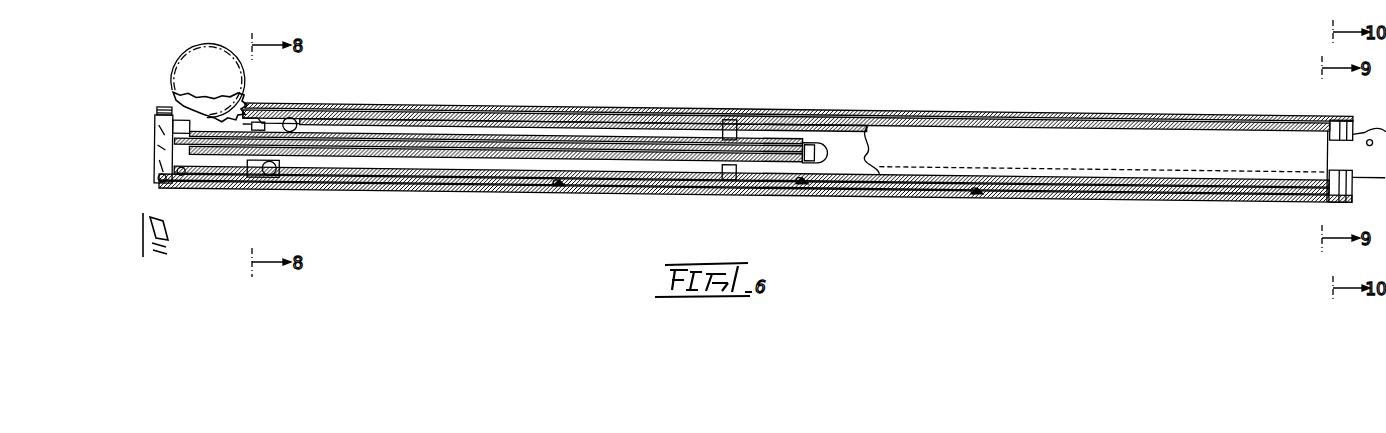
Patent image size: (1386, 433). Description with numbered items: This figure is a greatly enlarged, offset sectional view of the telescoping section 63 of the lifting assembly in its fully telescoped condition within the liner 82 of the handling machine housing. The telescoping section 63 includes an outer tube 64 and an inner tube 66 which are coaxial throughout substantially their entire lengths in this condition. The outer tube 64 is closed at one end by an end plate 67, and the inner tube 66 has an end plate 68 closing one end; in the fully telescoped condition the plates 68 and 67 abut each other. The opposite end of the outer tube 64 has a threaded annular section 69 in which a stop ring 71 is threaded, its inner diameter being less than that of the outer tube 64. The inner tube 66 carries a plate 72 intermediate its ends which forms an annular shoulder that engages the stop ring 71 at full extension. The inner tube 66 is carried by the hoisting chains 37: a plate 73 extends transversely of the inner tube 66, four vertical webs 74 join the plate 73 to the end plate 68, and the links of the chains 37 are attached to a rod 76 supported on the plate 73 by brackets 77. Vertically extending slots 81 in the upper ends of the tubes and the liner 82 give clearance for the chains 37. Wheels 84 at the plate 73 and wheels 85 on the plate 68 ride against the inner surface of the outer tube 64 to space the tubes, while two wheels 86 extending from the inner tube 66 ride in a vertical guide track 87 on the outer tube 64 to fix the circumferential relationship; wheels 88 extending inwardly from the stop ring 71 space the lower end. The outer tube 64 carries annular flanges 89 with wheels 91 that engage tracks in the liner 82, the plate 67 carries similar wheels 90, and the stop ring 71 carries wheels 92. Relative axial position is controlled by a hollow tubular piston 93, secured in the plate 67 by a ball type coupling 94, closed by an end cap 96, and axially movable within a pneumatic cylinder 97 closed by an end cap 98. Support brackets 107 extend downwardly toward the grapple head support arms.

The hoisting chains 37 is at (250, 118).
The telescoping section 63 is at (815, 102).
The outer tube 64 is at (878, 114).
The inner tube 66 is at (968, 130).
The end plate 67 is at (156, 122).
The end plate 68 is at (232, 122).
The threaded annular section 69 is at (1300, 114).
The stop ring 71 is at (1339, 108).
The plate 72 is at (730, 116).
The plate 73 is at (296, 116).
The vertical webs 74 is at (255, 164).
The rod 76 is at (272, 114).
The brackets 77 is at (257, 123).
The vertically extending slots 81 is at (165, 104).
The liner 82 is at (1077, 104).
The wheels 84 is at (273, 176).
The wheels 85 is at (205, 182).
The wheels 86 is at (300, 118).
The vertical guide track 87 is at (425, 112).
The wheels 88 is at (1312, 182).
The annular flanges 89 is at (982, 188).
The wheels 90 is at (180, 186).
The wheels 91 is at (973, 188).
The wheels 92 is at (1325, 188).
The hollow tubular piston 93 is at (562, 130).
The ball type coupling 94 is at (164, 184).
The end cap 96 is at (808, 140).
The pneumatic cylinder 97 is at (600, 136).
The end cap 98 is at (830, 147).
The support brackets 107 is at (1368, 150).